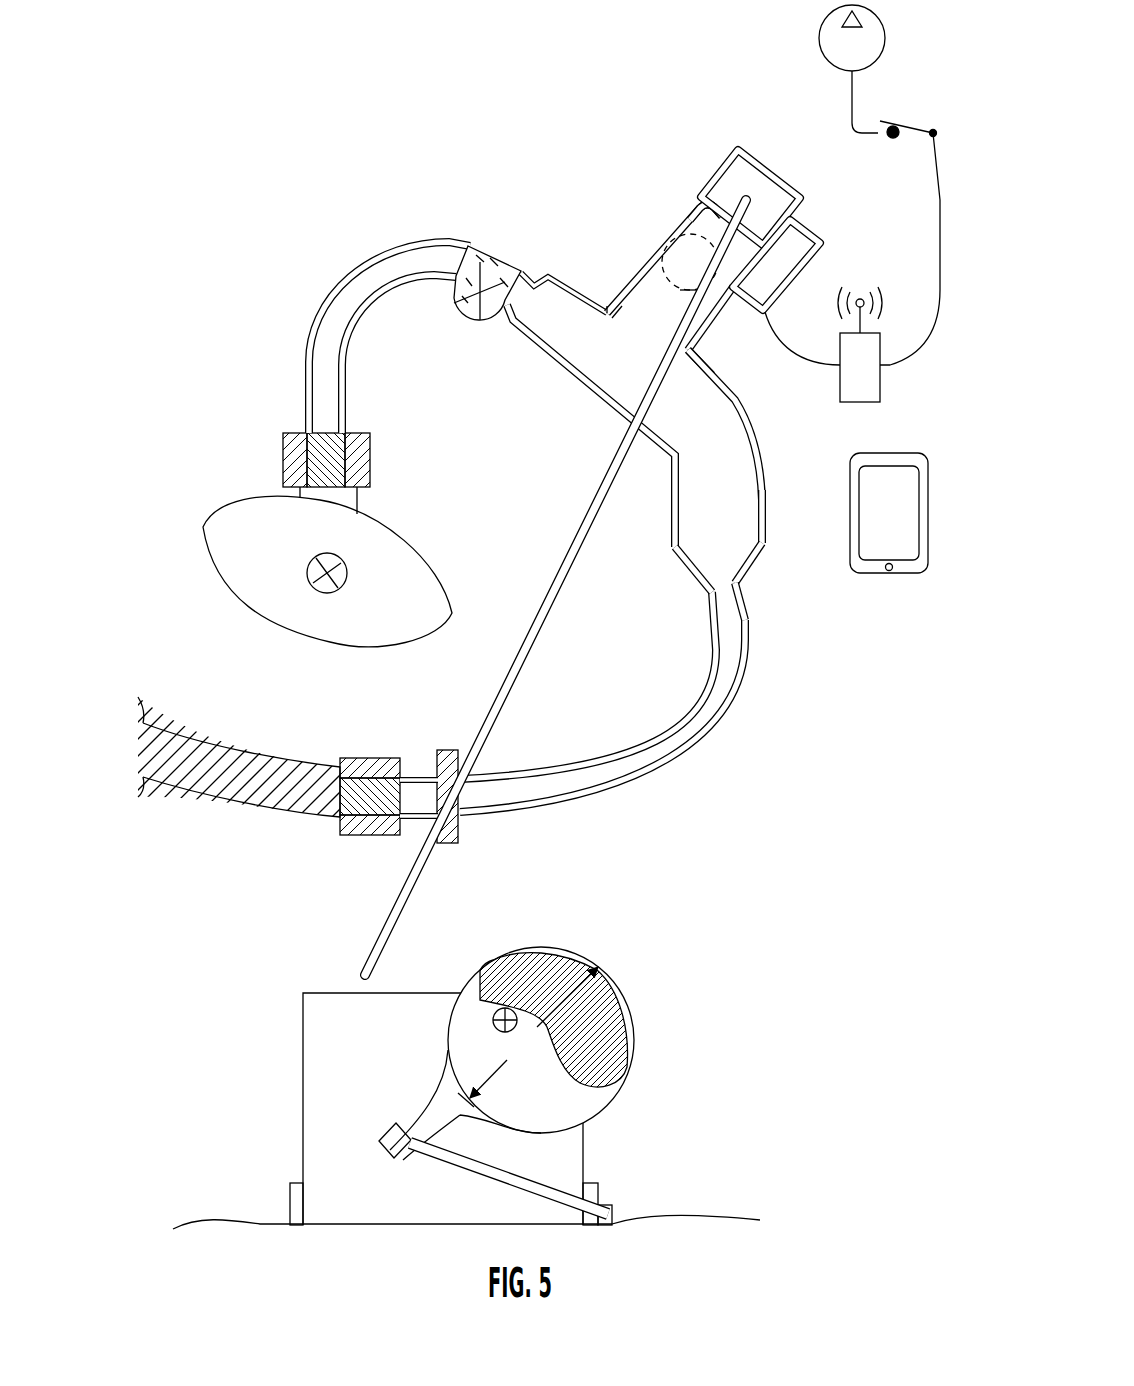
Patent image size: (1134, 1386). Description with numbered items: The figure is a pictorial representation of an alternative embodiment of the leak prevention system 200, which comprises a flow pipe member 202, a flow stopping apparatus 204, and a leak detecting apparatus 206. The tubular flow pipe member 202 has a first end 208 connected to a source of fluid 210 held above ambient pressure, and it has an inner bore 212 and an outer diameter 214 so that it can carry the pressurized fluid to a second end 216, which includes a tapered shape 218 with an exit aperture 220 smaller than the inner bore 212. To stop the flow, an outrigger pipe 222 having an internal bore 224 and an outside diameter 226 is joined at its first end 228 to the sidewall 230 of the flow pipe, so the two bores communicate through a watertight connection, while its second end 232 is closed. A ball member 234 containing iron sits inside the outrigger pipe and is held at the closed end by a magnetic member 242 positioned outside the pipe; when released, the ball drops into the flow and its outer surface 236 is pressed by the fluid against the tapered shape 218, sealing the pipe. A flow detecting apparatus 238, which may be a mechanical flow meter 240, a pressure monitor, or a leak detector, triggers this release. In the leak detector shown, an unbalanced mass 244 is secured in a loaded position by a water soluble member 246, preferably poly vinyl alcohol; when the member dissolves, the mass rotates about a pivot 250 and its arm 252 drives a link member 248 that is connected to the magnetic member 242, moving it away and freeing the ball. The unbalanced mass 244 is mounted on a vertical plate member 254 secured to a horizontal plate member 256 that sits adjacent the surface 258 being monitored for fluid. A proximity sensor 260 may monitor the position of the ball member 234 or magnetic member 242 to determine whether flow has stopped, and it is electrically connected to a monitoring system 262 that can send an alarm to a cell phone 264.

The leak prevention system 200 is at (192, 893).
The flow pipe member 202 is at (752, 446).
The flow stopping apparatus 204 is at (710, 307).
The leak detecting apparatus 206 is at (625, 1052).
The first end 208 is at (511, 322).
The source of fluid 210 is at (408, 258).
The inner bore 212 is at (762, 515).
The outer diameter 214 is at (765, 550).
The second end 216 is at (668, 545).
The tapered shape 218 is at (758, 578).
The exit aperture 220 is at (703, 587).
The outrigger pipe 222 is at (632, 283).
The internal bore 224 is at (620, 305).
The outside diameter 226 is at (678, 235).
The first end 228 is at (588, 296).
The sidewall 230 is at (693, 357).
The second end 232 is at (702, 208).
The ball member 234 is at (662, 287).
The outer surface 236 is at (690, 285).
The flow detecting apparatus 238 is at (458, 305).
The flow meter 240 is at (481, 322).
The magnetic member 242 is at (770, 180).
The unbalanced mass 244 is at (603, 962).
The water soluble member 246 is at (552, 1196).
The link member 248 is at (508, 690).
The pivot 250 is at (494, 1012).
The arm 252 is at (418, 1125).
The vertical plate member 254 is at (313, 1013).
The horizontal plate member 256 is at (290, 1200).
The surface 258 is at (198, 1224).
The proximity sensor 260 is at (822, 246).
The monitoring system 262 is at (882, 393).
The cell phone 264 is at (904, 569).